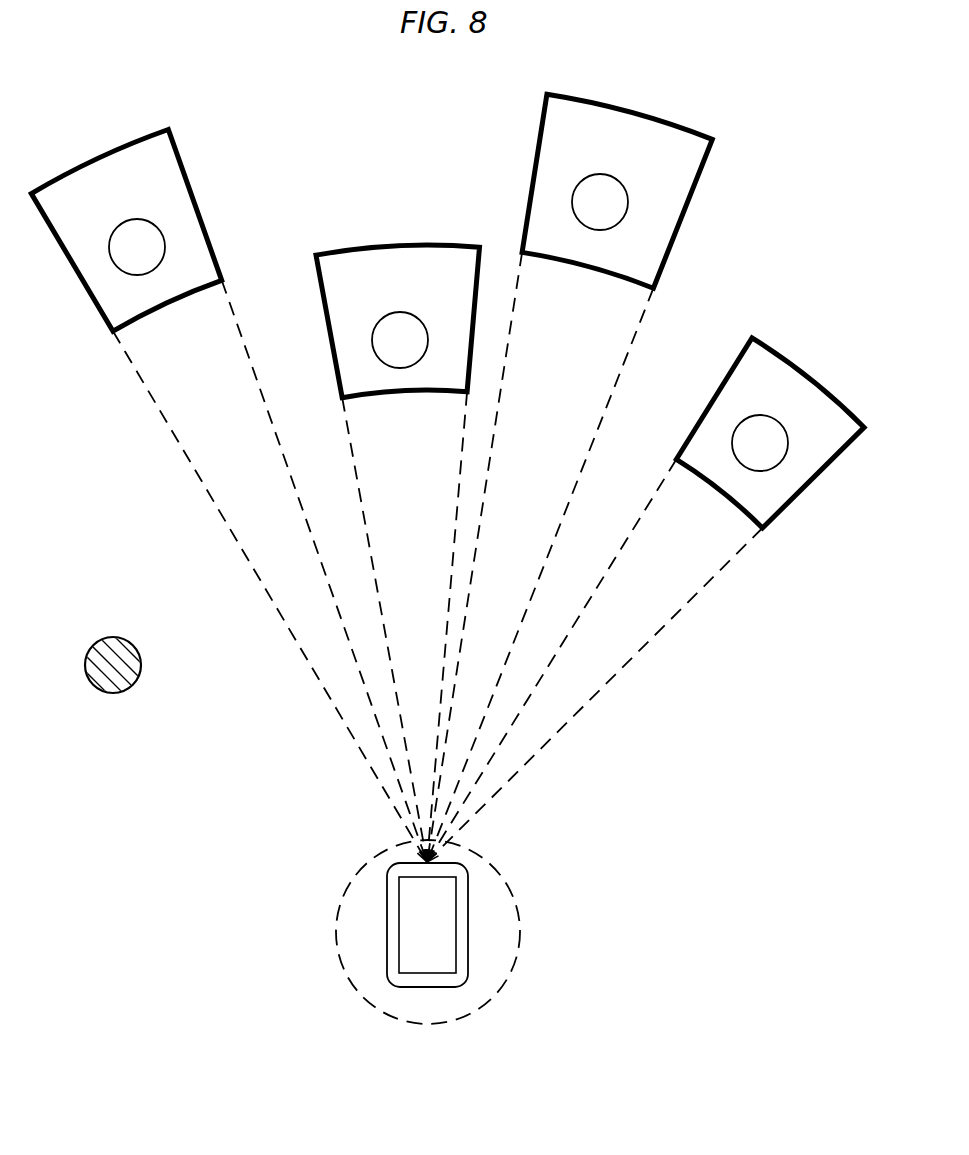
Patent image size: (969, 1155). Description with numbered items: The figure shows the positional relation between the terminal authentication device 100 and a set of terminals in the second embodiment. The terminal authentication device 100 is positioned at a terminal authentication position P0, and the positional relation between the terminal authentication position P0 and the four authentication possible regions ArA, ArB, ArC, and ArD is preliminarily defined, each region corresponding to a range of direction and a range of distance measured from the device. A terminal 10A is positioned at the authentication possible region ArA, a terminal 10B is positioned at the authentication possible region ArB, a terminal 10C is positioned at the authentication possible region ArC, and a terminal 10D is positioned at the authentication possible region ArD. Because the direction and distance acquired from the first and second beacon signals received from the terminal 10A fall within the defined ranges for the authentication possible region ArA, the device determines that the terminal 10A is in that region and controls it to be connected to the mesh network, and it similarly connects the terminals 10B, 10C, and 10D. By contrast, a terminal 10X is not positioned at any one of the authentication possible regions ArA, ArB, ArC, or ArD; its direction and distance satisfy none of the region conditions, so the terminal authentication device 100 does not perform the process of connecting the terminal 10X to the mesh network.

The authentication possible region ArA is at (147, 132).
The authentication possible region ArB is at (368, 242).
The authentication possible region ArC is at (644, 114).
The authentication possible region ArD is at (775, 340).
The terminal 10A is at (135, 219).
The terminal 10B is at (397, 311).
The terminal 10C is at (599, 173).
The terminal 10D is at (758, 414).
The terminal 10X is at (110, 638).
The terminal authentication device 100 is at (427, 988).
The terminal authentication position P0 is at (489, 1000).